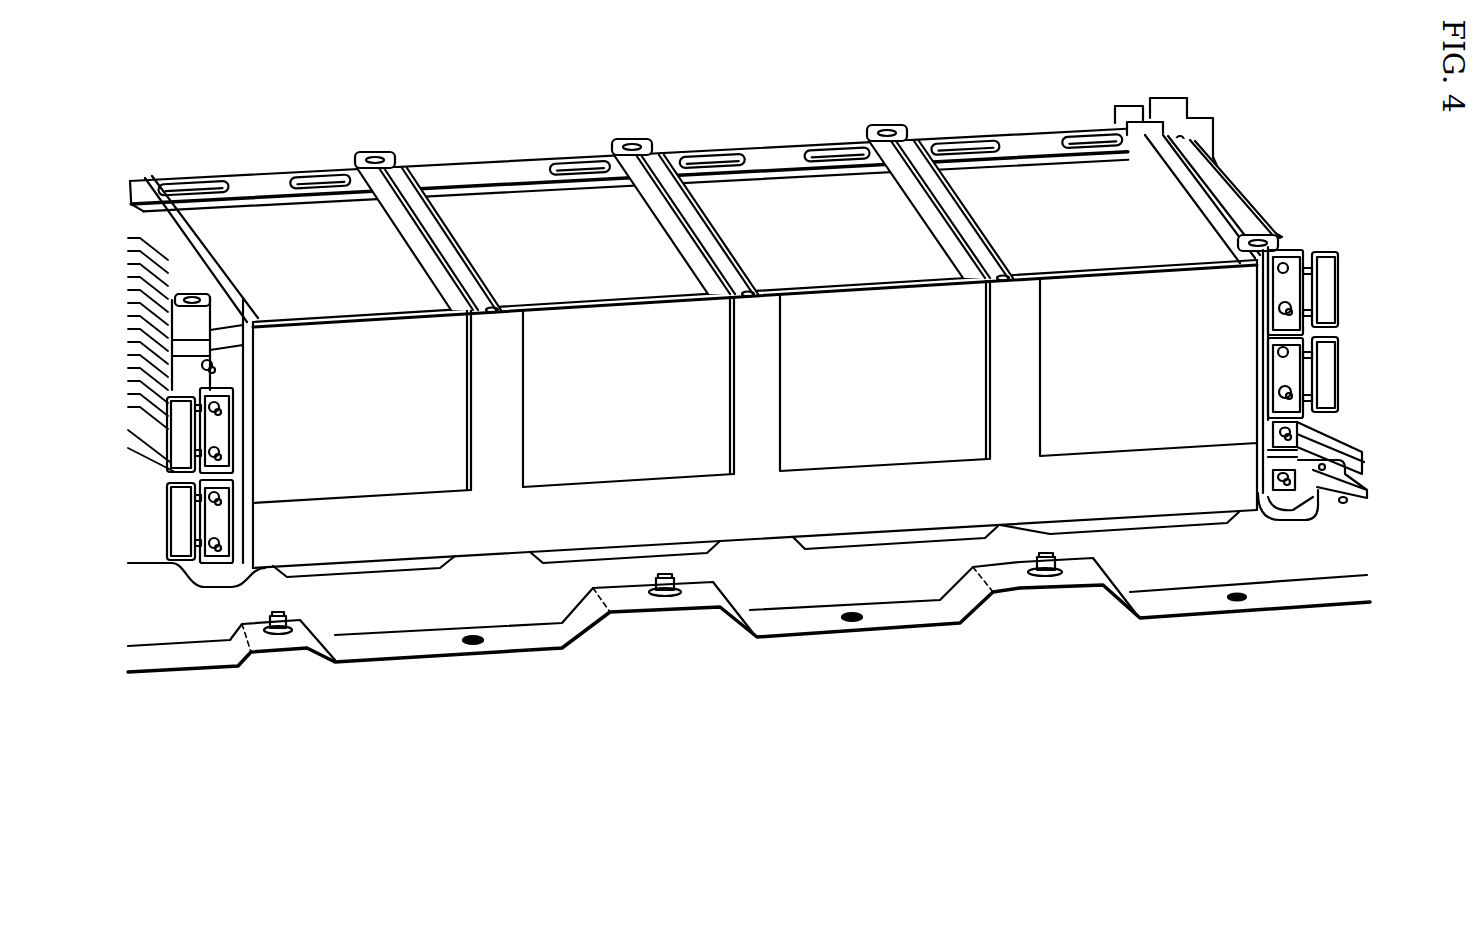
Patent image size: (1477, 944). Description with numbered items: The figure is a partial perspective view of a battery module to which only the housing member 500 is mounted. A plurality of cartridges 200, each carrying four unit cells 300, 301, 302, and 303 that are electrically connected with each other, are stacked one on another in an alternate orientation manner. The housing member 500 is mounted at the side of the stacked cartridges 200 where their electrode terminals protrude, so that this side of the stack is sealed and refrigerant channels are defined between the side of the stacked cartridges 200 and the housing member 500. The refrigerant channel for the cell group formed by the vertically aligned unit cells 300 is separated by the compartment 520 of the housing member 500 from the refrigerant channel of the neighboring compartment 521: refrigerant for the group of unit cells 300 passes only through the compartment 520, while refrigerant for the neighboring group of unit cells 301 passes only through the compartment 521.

The cartridge 200 is at (260, 188).
The unit cell 300 is at (380, 369).
The unit cell 301 is at (628, 358).
The unit cell 302 is at (885, 344).
The unit cell 303 is at (1154, 356).
The housing member 500 is at (883, 500).
The compartment 520 is at (388, 473).
The compartment 521 is at (620, 460).